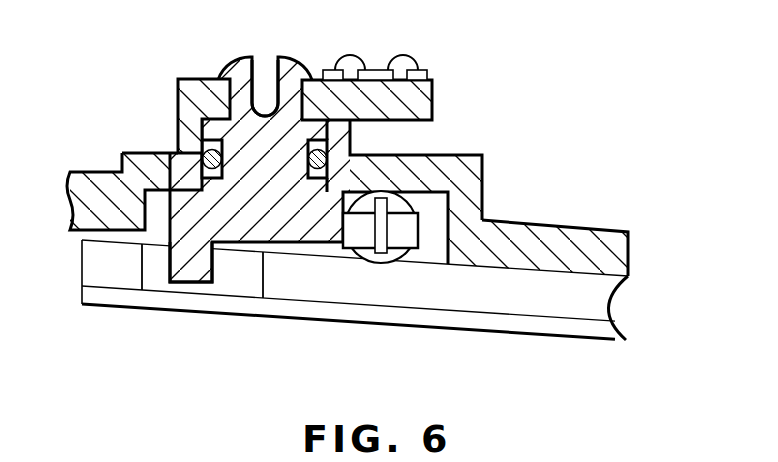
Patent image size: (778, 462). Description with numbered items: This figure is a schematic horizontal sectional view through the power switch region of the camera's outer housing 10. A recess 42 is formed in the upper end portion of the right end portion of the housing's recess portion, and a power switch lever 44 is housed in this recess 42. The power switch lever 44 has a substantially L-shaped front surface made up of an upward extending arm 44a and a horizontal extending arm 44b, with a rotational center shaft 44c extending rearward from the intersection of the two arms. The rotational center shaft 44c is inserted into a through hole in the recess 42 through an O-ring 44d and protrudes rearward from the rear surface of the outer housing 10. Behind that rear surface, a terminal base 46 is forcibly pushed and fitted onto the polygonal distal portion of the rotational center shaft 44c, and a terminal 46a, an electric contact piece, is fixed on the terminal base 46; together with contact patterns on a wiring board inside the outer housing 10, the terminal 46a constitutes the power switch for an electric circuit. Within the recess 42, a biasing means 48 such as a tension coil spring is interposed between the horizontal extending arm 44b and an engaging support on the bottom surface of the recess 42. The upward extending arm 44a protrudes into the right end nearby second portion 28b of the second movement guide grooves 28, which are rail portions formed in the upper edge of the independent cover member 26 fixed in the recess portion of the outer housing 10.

The outer housing 10 is at (553, 215).
The independent cover member 26 is at (465, 327).
The second movement guide grooves 28 is at (509, 291).
The second portion of second movement guide groove 28b is at (115, 273).
The recess 42 is at (440, 238).
The power switch lever 44 is at (293, 228).
The upward extending arm 44a is at (203, 265).
The horizontal extending arm 44b is at (407, 227).
The rotational center shaft 44c is at (267, 133).
The O-ring 44d is at (205, 155).
The terminal base 46 is at (193, 88).
The terminal 46a is at (425, 67).
The biasing means 48 is at (392, 263).